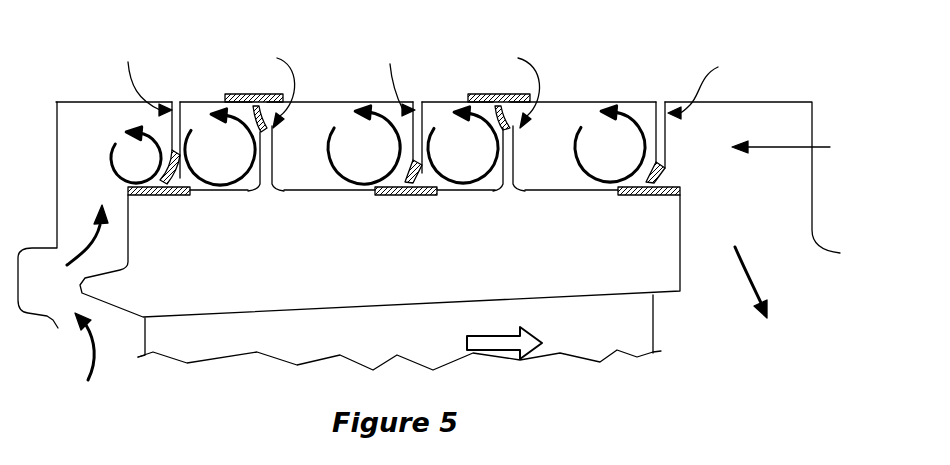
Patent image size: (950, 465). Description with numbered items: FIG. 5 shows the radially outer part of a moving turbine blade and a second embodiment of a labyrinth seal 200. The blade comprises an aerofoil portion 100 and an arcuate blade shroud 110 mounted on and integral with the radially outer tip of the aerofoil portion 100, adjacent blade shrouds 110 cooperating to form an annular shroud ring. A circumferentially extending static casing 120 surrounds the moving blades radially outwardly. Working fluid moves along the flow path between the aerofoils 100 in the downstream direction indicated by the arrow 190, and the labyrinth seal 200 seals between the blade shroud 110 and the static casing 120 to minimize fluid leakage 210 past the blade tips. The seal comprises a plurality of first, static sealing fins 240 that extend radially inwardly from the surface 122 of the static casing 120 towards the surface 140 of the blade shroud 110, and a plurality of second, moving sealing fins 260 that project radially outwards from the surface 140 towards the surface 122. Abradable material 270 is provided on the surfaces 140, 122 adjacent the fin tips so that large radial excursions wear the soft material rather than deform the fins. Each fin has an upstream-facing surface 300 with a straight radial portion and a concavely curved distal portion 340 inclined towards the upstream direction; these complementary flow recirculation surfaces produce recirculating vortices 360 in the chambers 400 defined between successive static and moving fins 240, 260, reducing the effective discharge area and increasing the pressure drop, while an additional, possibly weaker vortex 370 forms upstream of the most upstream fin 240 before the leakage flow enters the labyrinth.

The aerofoil portion 100 is at (362, 347).
The blade shroud 110 is at (362, 282).
The static casing 120 is at (356, 30).
The surface of the static casing 122 is at (103, 106).
The surface of the moving blade shroud 140 is at (300, 182).
The arrow indicating downstream direction of working fluid 190 is at (504, 336).
The labyrinth seal 200 is at (798, 146).
The fluid leakage 210 is at (408, 301).
The first sealing fins 240 is at (429, 80).
The second sealing fins 260 is at (398, 83).
The abradable material 270 is at (248, 93).
The upstream-facing surface 300 is at (413, 127).
The distal portion 340 is at (245, 112).
The recirculating vortices 360 is at (415, 145).
The additional vortex 370 is at (136, 155).
The chambers 400 is at (308, 120).